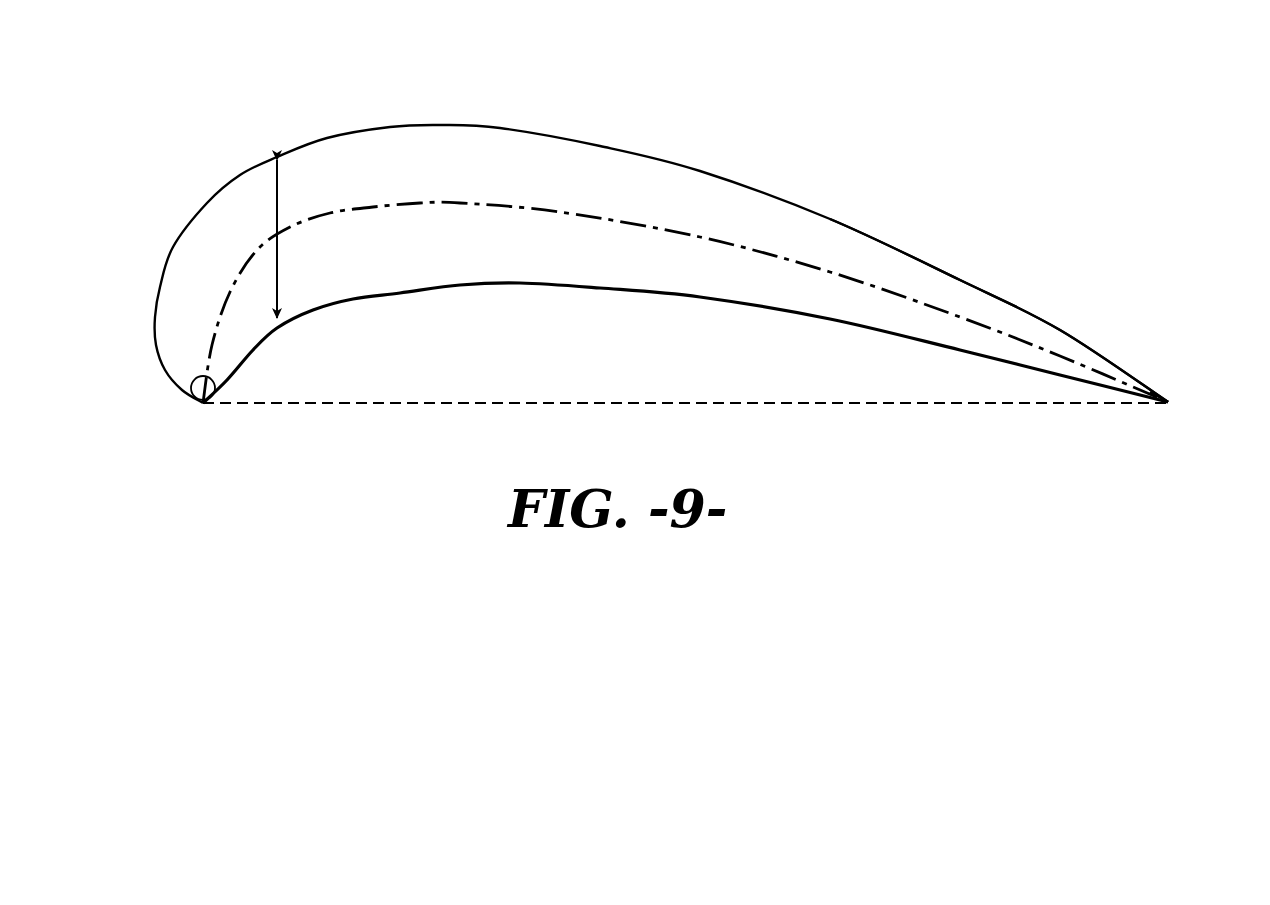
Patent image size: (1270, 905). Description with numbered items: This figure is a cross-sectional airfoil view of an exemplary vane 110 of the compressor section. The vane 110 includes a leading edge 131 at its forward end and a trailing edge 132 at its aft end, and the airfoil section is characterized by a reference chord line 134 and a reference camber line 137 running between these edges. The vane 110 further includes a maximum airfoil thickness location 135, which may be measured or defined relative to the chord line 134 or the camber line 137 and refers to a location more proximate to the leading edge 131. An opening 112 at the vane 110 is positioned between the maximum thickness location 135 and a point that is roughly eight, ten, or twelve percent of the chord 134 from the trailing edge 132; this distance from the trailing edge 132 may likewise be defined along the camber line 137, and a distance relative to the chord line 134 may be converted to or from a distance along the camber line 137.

The vane 110 is at (661, 219).
The opening 112 is at (1063, 321).
The leading edge 131 is at (203, 406).
The trailing edge 132 is at (1175, 404).
The reference chord line 134 is at (415, 406).
The maximum airfoil thickness location 135 is at (273, 222).
The reference camber line 137 is at (367, 208).